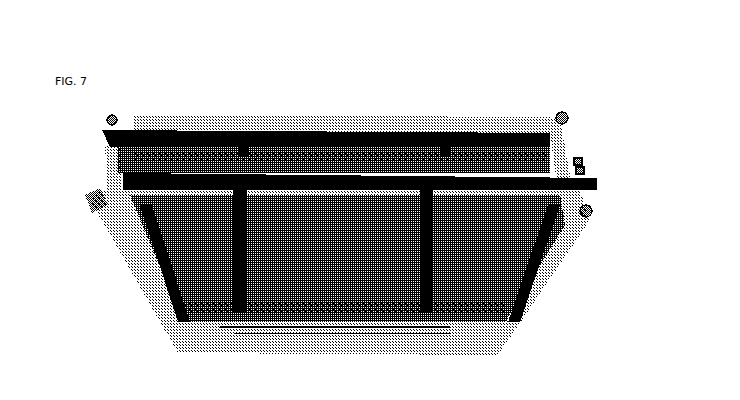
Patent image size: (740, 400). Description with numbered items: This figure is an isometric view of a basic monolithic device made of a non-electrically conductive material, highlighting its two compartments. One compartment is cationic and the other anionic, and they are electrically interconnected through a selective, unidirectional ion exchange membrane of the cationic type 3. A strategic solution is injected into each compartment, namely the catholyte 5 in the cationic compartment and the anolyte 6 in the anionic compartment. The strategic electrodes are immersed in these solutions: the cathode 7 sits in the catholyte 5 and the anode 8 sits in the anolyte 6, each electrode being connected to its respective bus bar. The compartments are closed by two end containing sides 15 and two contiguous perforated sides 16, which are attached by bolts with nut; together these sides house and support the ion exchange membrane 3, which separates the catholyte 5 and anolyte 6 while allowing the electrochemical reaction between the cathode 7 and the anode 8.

The ion exchange membrane of the cationic type 3 is at (407, 133).
The catholyte 5 is at (220, 138).
The anolyte 6 is at (243, 145).
The cathode 7 is at (307, 132).
The anode 8 is at (355, 137).
The end containing sides 15 is at (567, 118).
The contiguous perforated sides 16 is at (584, 163).